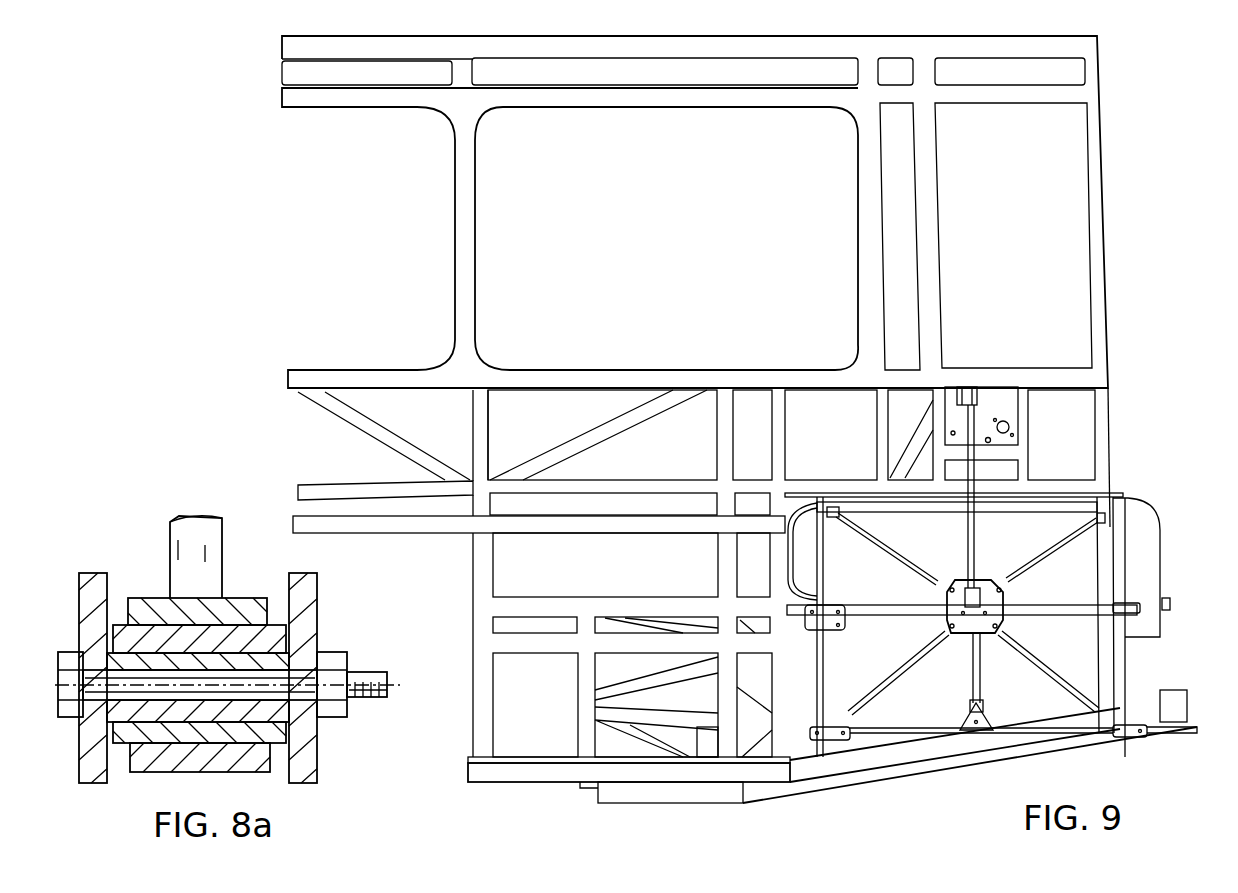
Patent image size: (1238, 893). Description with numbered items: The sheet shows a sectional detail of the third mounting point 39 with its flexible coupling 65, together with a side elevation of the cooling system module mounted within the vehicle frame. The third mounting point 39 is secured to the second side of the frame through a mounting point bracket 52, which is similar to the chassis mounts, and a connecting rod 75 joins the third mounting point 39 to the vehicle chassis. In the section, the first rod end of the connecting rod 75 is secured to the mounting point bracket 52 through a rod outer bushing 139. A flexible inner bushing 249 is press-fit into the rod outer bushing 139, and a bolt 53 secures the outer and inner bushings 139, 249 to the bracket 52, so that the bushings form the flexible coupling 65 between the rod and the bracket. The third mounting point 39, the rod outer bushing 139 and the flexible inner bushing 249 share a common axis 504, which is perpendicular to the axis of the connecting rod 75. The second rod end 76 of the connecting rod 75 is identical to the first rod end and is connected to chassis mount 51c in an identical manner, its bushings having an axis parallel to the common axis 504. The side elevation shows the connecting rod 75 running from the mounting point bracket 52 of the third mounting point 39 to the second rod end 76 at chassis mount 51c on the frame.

In FIG. 8a, the third mounting point 39 is at (127, 552).
In FIG. 9, the third mounting point 39 is at (979, 581).
In FIG. 8a, the connecting rod 75 is at (205, 548).
In FIG. 9, the connecting rod 75 is at (970, 542).
In FIG. 8a, the mounting point bracket 52 is at (305, 613).
In FIG. 9, the mounting point bracket 52 is at (982, 598).
In FIG. 8a, the bolt 53 is at (300, 680).
In FIG. 8a, the common axis 504 is at (387, 698).
In FIG. 8a, the flexible inner bushing 249 is at (150, 732).
In FIG. 8a, the flexible coupling 65 is at (270, 778).
In FIG. 9, the chassis mount 51c is at (980, 398).
In FIG. 9, the second rod end 76 is at (968, 418).
In FIG. 9, the rod outer bushing 139 is at (972, 636).